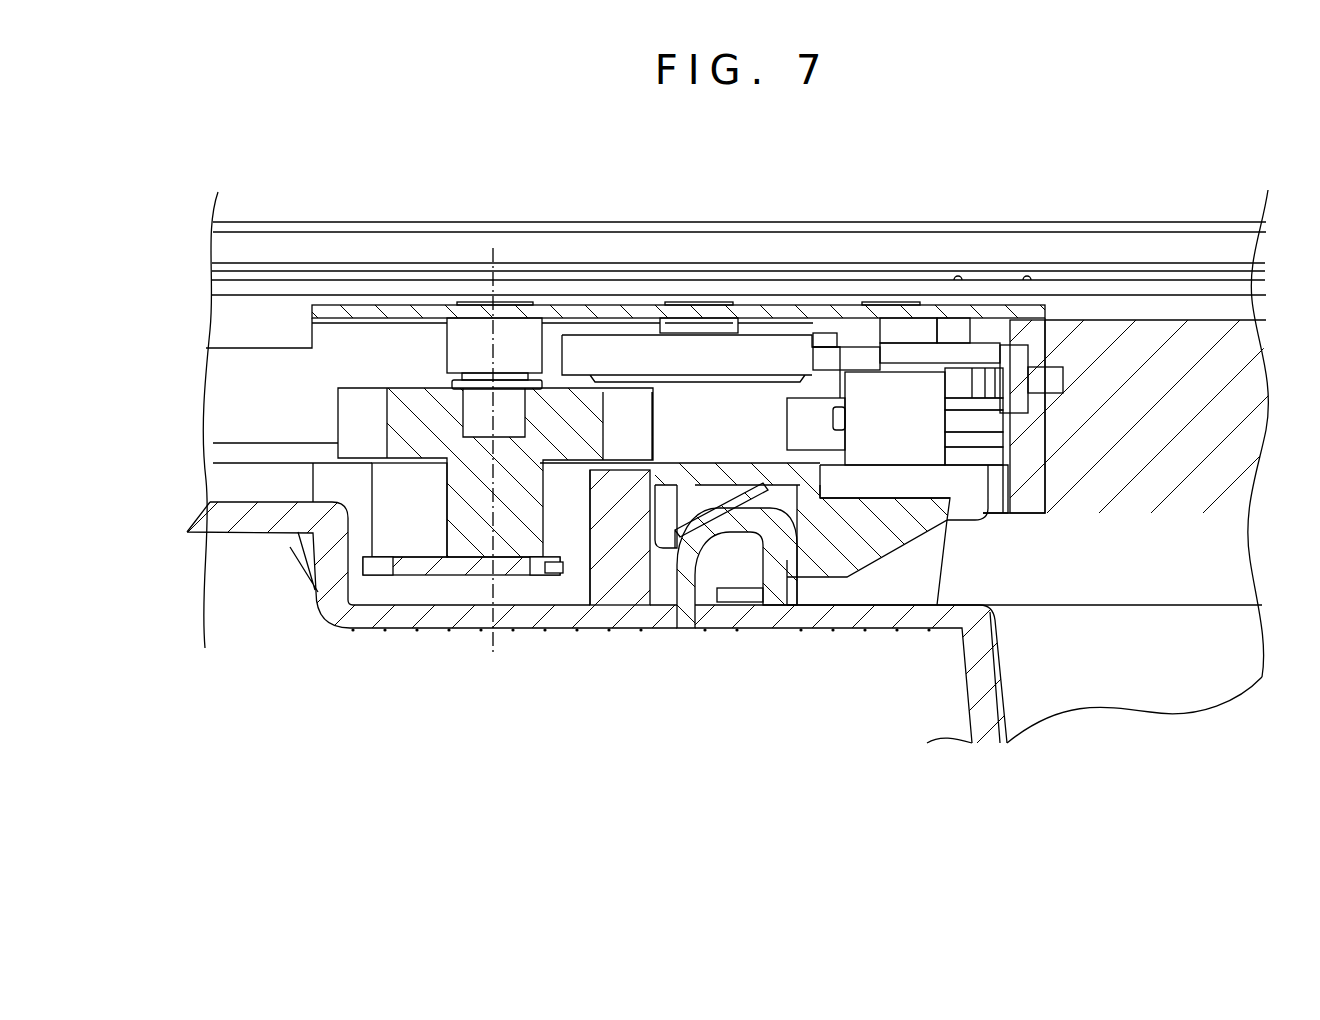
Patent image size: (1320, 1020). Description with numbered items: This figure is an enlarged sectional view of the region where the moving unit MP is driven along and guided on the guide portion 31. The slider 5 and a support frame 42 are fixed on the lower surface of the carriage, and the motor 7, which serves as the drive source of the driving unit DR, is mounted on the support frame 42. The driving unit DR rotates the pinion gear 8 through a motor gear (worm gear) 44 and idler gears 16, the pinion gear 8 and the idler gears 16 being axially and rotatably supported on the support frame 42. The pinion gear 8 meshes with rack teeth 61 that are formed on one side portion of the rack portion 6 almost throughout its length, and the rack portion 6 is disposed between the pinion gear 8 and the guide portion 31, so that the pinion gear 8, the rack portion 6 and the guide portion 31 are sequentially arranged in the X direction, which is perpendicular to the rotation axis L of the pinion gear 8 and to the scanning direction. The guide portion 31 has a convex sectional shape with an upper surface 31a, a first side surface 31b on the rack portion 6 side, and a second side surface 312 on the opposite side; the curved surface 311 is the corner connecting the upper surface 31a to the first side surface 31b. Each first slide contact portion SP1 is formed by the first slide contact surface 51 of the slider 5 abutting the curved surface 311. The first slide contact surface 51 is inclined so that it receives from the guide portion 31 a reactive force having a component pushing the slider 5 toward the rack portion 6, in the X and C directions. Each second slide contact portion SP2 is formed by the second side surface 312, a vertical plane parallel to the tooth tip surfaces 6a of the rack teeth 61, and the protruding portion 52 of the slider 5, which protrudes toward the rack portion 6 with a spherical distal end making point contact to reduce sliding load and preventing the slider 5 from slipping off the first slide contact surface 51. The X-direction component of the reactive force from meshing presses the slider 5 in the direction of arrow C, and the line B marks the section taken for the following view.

The support frame 42 is at (388, 345).
The idler gears 16 is at (828, 352).
The motor gear (worm gear) 44 is at (898, 393).
The motor 7 is at (1160, 342).
The tooth tip surfaces 6a is at (590, 530).
The slider 5 is at (807, 475).
The upper surface 31a is at (760, 490).
The first slide contact surface 51 is at (727, 505).
The pinion gear 8 is at (475, 538).
The rack teeth 61 is at (585, 582).
The rack portion 6 is at (600, 550).
The curved surface 311 is at (678, 632).
The first side surface 31b is at (690, 632).
The guide portion 31 is at (745, 571).
The second side surface (second slide contact surface) 312 is at (733, 640).
The protruding portion (convex portion) 52 is at (800, 580).
The first slide contact portion SP1 is at (699, 492).
The second slide contact portion SP2 is at (819, 598).
The moving unit MP is at (268, 338).
The driving unit DR is at (1080, 527).
The rotation axis L is at (493, 658).
The line B- B is at (312, 592).
The arrow C (pressing direction) C is at (816, 562).
The X direction X is at (1098, 192).